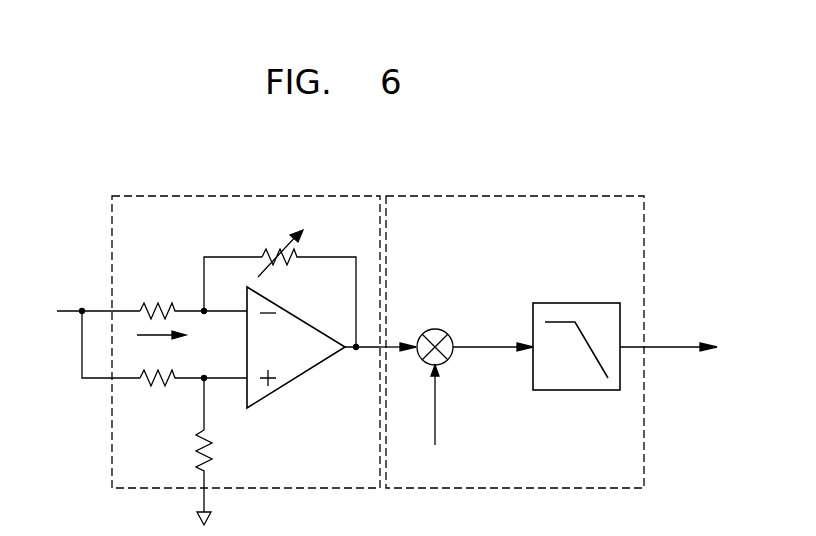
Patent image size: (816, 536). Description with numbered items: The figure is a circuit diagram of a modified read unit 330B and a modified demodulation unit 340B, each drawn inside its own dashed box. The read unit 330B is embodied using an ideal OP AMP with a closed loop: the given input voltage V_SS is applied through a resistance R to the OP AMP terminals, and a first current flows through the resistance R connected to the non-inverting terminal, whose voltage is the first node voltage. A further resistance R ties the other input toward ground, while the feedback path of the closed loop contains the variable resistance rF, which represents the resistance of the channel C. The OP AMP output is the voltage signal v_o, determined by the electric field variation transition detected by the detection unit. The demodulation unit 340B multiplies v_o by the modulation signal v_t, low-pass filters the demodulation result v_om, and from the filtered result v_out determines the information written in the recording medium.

The read unit 330B is at (312, 196).
The demodulation unit 340B is at (559, 196).
The resistance R is at (193, 396).
The resistance of the channel rF is at (307, 284).